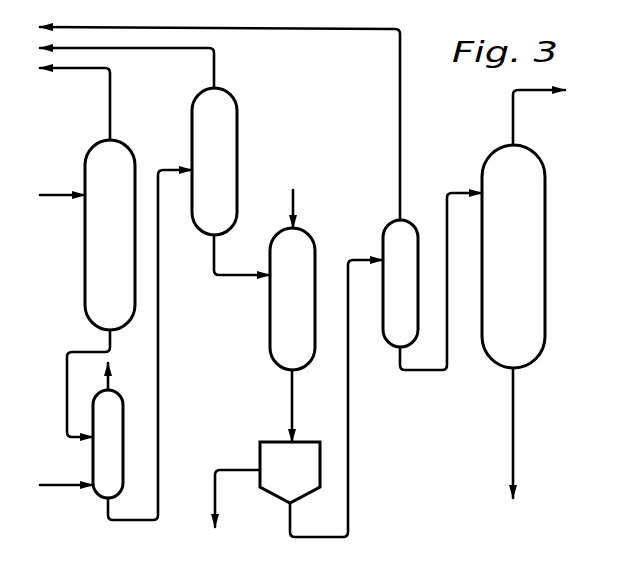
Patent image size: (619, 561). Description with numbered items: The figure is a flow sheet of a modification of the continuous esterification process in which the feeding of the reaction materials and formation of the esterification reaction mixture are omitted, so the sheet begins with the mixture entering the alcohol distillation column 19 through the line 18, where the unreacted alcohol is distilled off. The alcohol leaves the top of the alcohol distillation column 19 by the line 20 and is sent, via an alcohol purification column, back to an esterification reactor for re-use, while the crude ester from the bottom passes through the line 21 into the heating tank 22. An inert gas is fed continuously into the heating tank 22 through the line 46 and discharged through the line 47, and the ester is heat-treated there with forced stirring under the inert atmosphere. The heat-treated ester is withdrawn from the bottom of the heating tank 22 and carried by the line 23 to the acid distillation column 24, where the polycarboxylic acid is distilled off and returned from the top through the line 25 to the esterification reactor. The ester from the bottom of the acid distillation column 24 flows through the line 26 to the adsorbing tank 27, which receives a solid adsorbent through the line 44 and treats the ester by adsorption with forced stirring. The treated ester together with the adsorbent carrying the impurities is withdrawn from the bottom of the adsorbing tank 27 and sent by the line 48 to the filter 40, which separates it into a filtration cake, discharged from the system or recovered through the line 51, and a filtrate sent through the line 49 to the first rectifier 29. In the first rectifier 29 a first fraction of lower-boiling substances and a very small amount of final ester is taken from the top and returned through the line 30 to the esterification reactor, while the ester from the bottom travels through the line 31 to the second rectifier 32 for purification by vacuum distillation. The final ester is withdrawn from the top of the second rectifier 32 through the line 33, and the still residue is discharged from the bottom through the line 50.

The line 18 is at (53, 196).
The alcohol distillation column 19 is at (121, 260).
The line 20 is at (81, 68).
The line 21 is at (67, 408).
The heating tank 22 is at (118, 464).
The line 23 is at (160, 362).
The acid distillation column 24 is at (228, 175).
The line 25 is at (167, 48).
The line 26 is at (238, 278).
The adsorbing tank 27 is at (304, 310).
The first rectifier 29 is at (414, 232).
The line 30 is at (399, 133).
The line 31 is at (412, 370).
The second rectifier 32 is at (522, 273).
The line 33 is at (537, 92).
The filter 40 is at (306, 483).
The line 44 is at (294, 203).
The line 46 is at (59, 487).
The line 47 is at (110, 378).
The line 48 is at (294, 403).
The line 49 is at (350, 452).
The line 50 is at (511, 452).
The line 51 is at (219, 498).